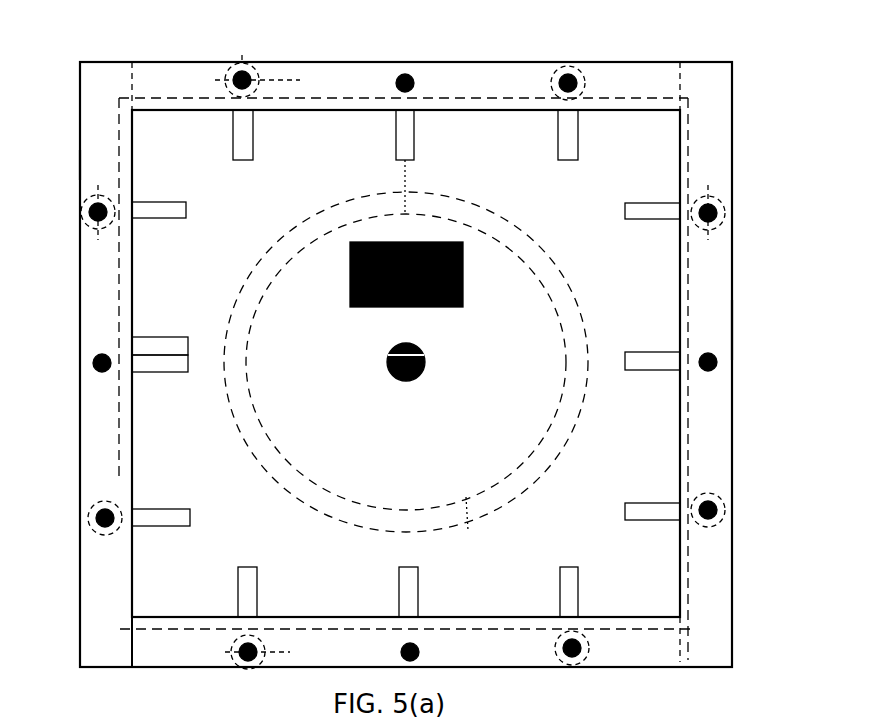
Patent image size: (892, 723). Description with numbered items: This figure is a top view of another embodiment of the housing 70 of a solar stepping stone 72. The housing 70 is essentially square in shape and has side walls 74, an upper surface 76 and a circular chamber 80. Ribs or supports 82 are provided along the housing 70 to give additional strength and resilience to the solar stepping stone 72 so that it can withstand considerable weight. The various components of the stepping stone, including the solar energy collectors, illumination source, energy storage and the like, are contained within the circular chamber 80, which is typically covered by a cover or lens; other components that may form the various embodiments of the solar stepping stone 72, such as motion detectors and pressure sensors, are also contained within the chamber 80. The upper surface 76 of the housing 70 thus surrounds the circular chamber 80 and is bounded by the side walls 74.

The housing 70 is at (175, 73).
The solar stepping stone 72 is at (76, 164).
The side walls 74 is at (722, 328).
The upper surface 76 is at (655, 435).
The circular chamber 80 is at (406, 346).
The ribs or supports 82 is at (646, 201).